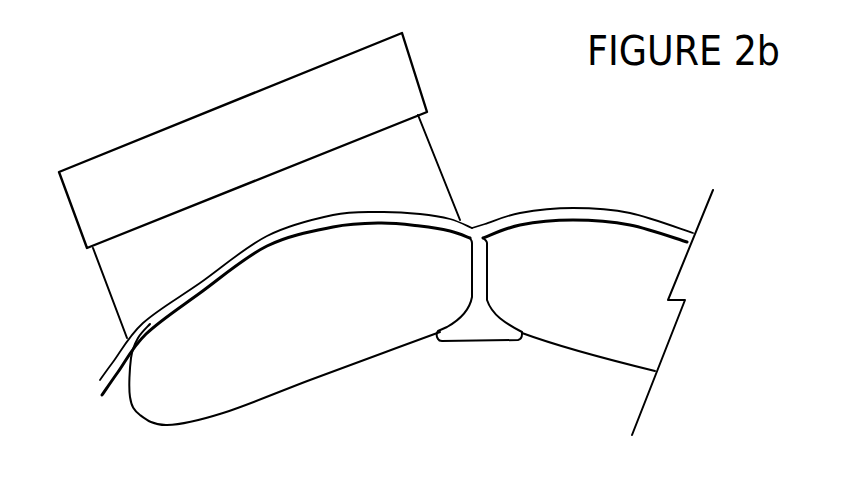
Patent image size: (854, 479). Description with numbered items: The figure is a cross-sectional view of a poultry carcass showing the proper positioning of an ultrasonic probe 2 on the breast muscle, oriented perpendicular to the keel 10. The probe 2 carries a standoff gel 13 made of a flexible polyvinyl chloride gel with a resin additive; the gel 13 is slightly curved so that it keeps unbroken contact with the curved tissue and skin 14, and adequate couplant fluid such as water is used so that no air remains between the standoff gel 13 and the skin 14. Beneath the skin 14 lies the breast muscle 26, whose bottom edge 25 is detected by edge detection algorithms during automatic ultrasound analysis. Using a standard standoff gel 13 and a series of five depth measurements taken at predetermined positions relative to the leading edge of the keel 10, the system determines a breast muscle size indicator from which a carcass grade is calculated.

The ultrasonic probe 2 is at (423, 92).
The standoff gel 13 is at (423, 165).
The skin 14 is at (122, 345).
The breast muscle 26 is at (577, 213).
The keel 10 is at (510, 338).
The bottom edge 25 is at (306, 368).